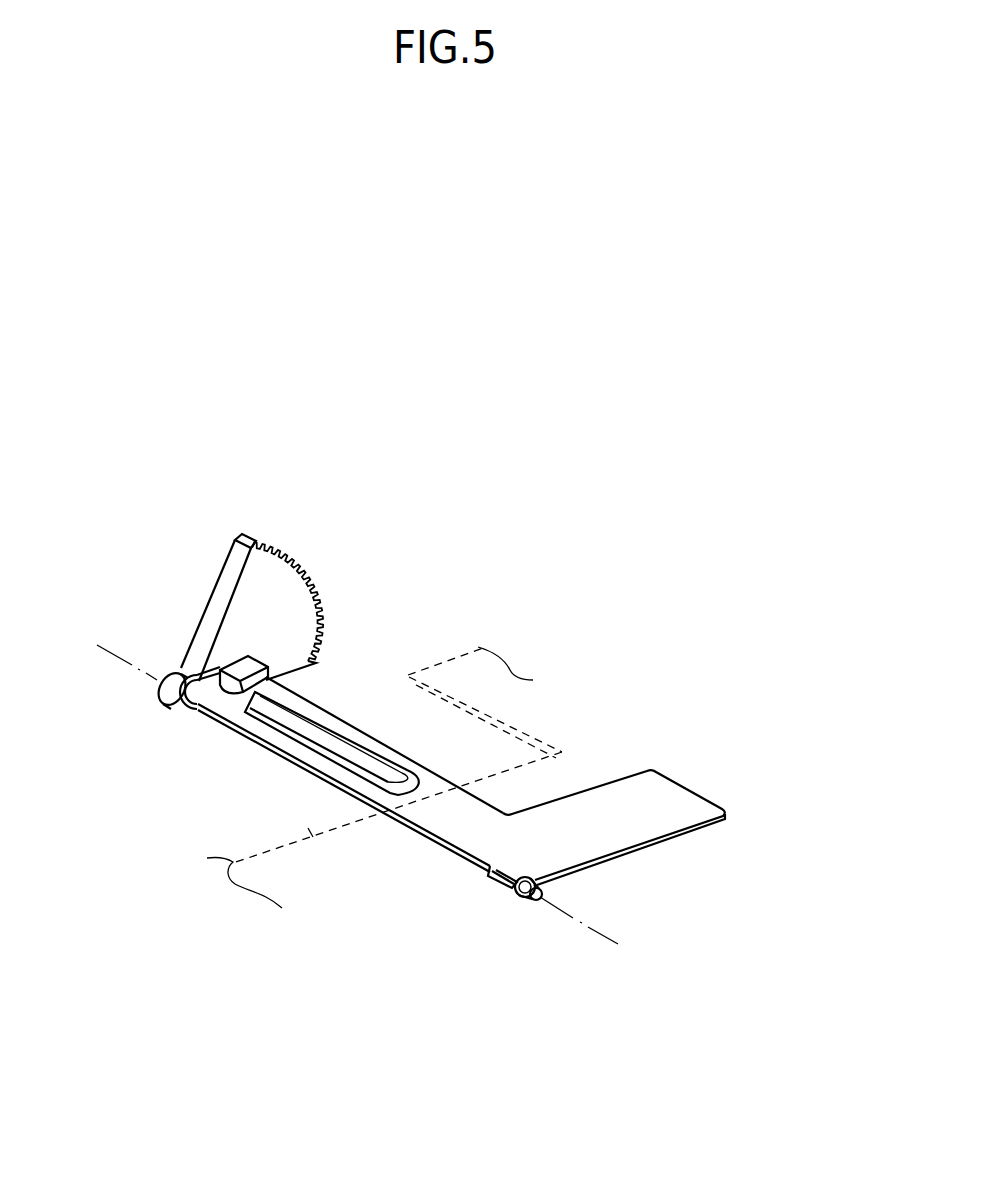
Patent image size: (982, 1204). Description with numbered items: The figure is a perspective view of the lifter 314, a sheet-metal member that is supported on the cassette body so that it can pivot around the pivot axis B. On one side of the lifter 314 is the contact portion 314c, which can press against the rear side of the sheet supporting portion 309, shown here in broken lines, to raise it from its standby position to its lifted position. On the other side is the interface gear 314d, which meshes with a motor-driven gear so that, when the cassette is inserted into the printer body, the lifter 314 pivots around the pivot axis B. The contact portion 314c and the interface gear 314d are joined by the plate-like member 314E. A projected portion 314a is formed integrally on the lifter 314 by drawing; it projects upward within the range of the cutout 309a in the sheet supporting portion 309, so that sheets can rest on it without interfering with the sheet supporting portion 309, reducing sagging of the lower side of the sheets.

The lifter 314 is at (432, 580).
The interface gear 314d is at (242, 638).
The projected portion 314a is at (287, 728).
The contact portion 314c is at (652, 803).
The plate-like member 314E is at (453, 815).
The sheet supporting portion 309 is at (508, 697).
The cutout 309a is at (308, 828).
The pivot axis B is at (592, 927).